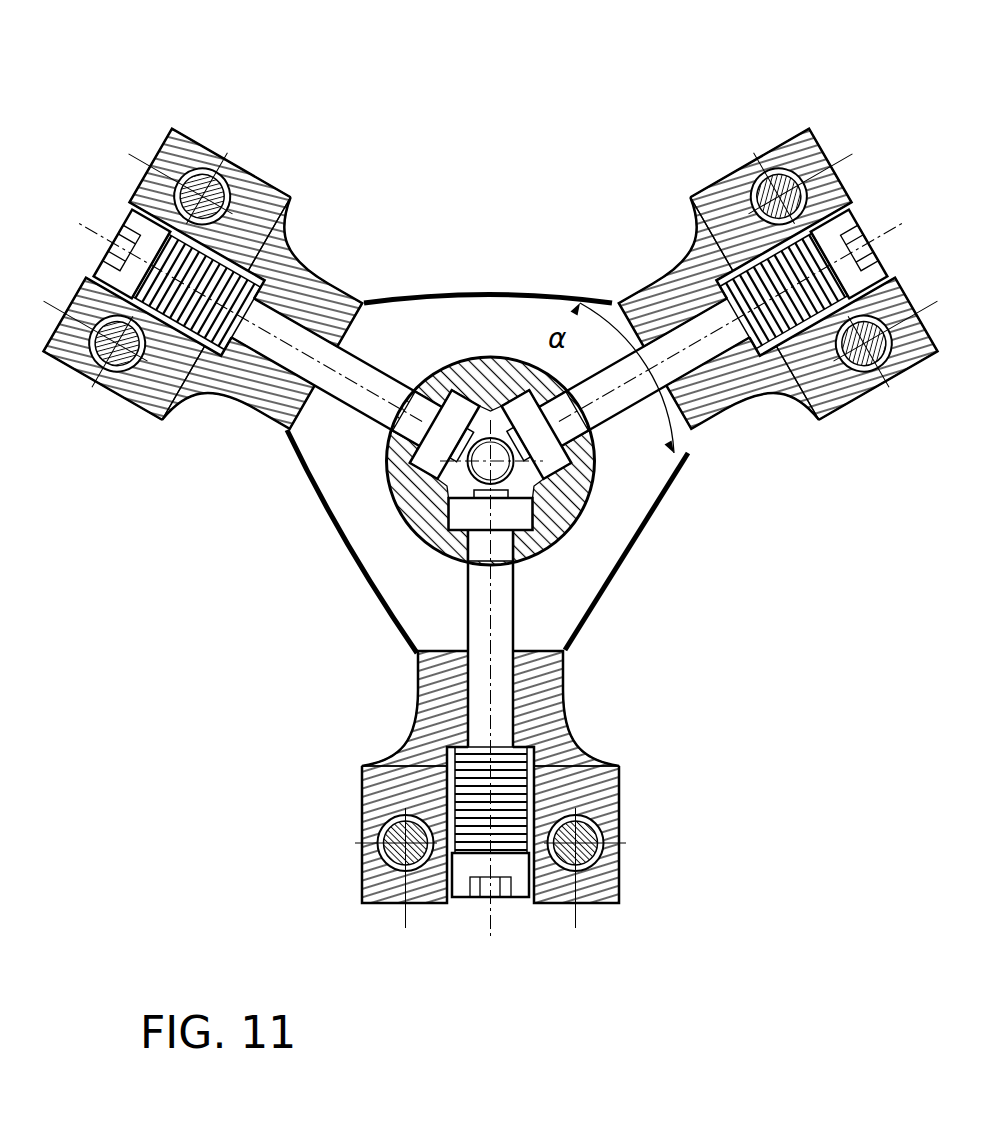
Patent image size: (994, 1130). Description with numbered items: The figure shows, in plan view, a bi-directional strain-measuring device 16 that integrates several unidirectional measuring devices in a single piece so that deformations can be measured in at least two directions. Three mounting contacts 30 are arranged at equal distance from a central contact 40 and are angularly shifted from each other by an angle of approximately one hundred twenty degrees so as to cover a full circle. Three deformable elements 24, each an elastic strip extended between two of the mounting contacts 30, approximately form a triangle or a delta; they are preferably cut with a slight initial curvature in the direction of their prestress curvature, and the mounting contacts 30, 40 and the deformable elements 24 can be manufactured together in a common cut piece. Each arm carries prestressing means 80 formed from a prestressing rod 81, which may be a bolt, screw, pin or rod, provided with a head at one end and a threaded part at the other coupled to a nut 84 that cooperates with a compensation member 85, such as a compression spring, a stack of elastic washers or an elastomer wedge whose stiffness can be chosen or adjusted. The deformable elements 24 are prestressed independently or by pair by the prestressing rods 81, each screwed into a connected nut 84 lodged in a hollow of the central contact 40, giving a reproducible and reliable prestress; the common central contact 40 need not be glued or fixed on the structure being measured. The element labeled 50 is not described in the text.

The bi-directional strain-measuring device 16 is at (572, 157).
The deformable elements 24 is at (397, 300).
The mounting contacts 30 is at (697, 268).
The central contact 40 is at (492, 378).
The mounting block 50 is at (200, 172).
The prestressing means 80 is at (108, 214).
The prestressing rod 81 is at (274, 410).
The nut 84 is at (433, 455).
The compensation member 85 is at (133, 330).